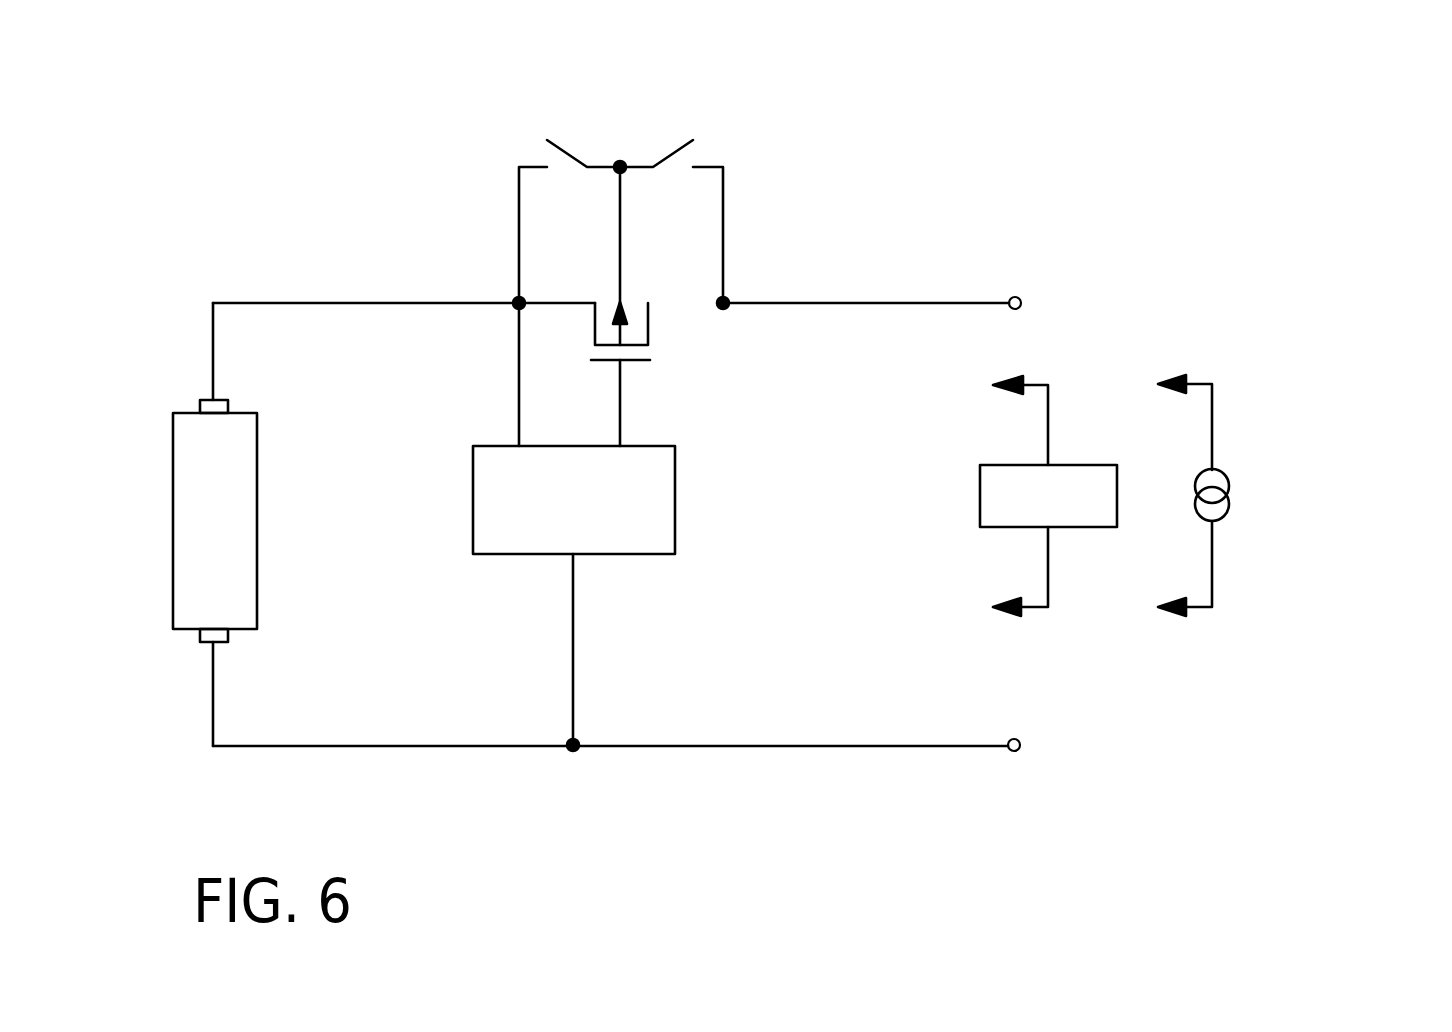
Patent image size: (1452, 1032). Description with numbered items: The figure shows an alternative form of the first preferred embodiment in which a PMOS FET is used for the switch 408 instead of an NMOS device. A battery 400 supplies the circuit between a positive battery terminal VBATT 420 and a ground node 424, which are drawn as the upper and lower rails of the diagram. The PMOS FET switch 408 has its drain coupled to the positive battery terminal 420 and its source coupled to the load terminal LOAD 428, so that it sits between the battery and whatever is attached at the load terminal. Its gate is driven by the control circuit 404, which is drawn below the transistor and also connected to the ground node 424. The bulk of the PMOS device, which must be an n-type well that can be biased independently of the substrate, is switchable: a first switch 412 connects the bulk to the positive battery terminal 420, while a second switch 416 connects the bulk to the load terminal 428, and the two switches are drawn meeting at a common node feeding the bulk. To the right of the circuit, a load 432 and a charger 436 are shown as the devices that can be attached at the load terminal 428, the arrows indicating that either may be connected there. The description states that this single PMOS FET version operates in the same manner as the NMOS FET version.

The battery 400 is at (235, 595).
The control circuit 404 is at (662, 527).
The PMOS FET switch 408 is at (638, 362).
The switch SW1 412 is at (560, 147).
The switch SW2 416 is at (680, 147).
The positive battery terminal VBATT 420 is at (265, 303).
The ground node 424 is at (257, 746).
The load terminal LOAD 428 is at (918, 303).
The load 432 is at (1000, 518).
The charger 436 is at (1225, 520).